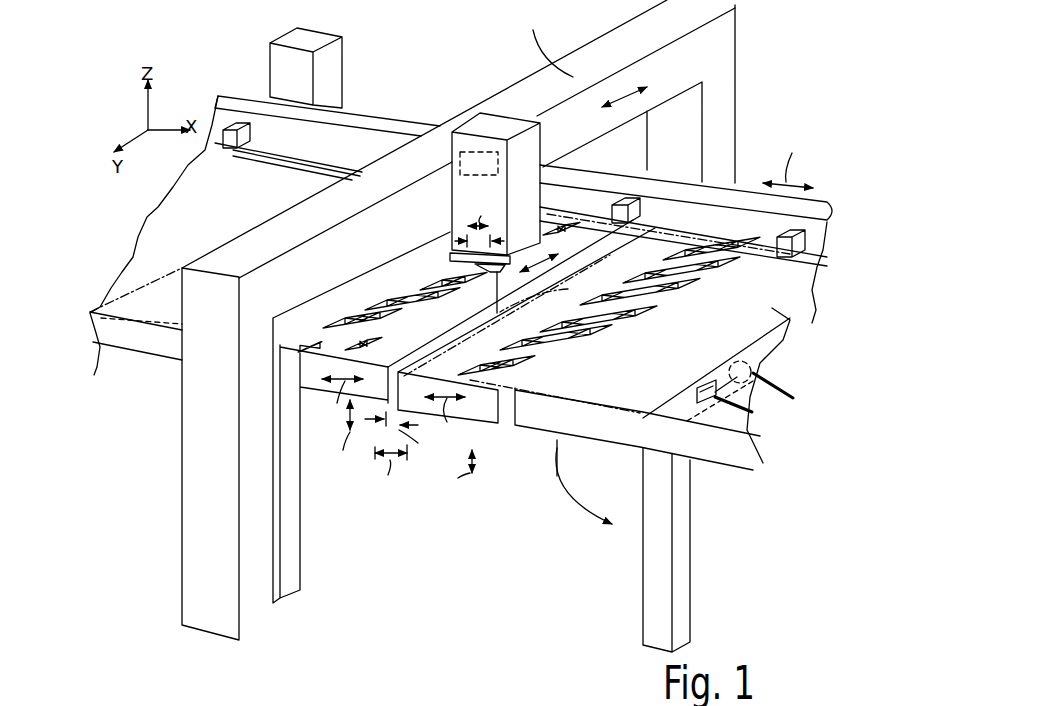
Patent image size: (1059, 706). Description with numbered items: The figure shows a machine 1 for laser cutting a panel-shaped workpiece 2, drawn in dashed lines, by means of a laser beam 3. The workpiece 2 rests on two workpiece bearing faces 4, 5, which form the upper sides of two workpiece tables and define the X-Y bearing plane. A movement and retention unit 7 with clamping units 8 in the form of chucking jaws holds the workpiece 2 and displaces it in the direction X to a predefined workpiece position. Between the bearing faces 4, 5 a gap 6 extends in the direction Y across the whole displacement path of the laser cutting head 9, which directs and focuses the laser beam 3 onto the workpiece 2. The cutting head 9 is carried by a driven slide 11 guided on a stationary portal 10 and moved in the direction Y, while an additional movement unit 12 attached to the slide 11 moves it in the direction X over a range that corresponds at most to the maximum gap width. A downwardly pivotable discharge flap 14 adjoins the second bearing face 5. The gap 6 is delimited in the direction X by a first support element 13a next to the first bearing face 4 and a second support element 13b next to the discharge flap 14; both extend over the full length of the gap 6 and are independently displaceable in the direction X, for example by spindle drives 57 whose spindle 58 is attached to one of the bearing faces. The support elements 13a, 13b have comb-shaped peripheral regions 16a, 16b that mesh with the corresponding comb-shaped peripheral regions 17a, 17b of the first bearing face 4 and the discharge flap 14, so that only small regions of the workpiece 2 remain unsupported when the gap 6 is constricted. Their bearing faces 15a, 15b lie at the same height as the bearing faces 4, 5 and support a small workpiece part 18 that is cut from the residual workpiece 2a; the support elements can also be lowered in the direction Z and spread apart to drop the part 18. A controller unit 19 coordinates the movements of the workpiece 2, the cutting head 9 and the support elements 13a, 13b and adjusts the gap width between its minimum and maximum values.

The machine 1 is at (774, 80).
The panel-shaped workpiece 2 is at (555, 452).
The residual workpiece 2a is at (584, 486).
The laser beam 3 is at (493, 312).
The first workpiece bearing face 4 is at (265, 247).
The second workpiece bearing face 5 is at (735, 432).
The gap 6 is at (593, 250).
The movement and retention unit 7 is at (741, 213).
The clamping units 8 is at (802, 282).
The laser cutting head 9 is at (342, 267).
The stationary portal 10 is at (257, 603).
The driven slide 11 is at (481, 165).
The movement unit 12 is at (452, 148).
The first support element 13a is at (415, 266).
The second support element 13b is at (579, 268).
The discharge flap 14 is at (785, 345).
The bearing face of first support element 15a is at (330, 360).
The bearing face of second support element 15b is at (468, 368).
The comb-shaped peripheral region of first support element 16a is at (305, 340).
The comb-shaped peripheral region of second support element 16b is at (515, 375).
The comb-shaped peripheral region of first workpiece bearing face 17a is at (412, 298).
The comb-shaped peripheral region of discharge flap 17b is at (552, 354).
The workpiece part 18 is at (590, 333).
The controller unit 19 is at (288, 72).
The spindle drive 57 is at (714, 366).
The spindle 58 is at (775, 391).